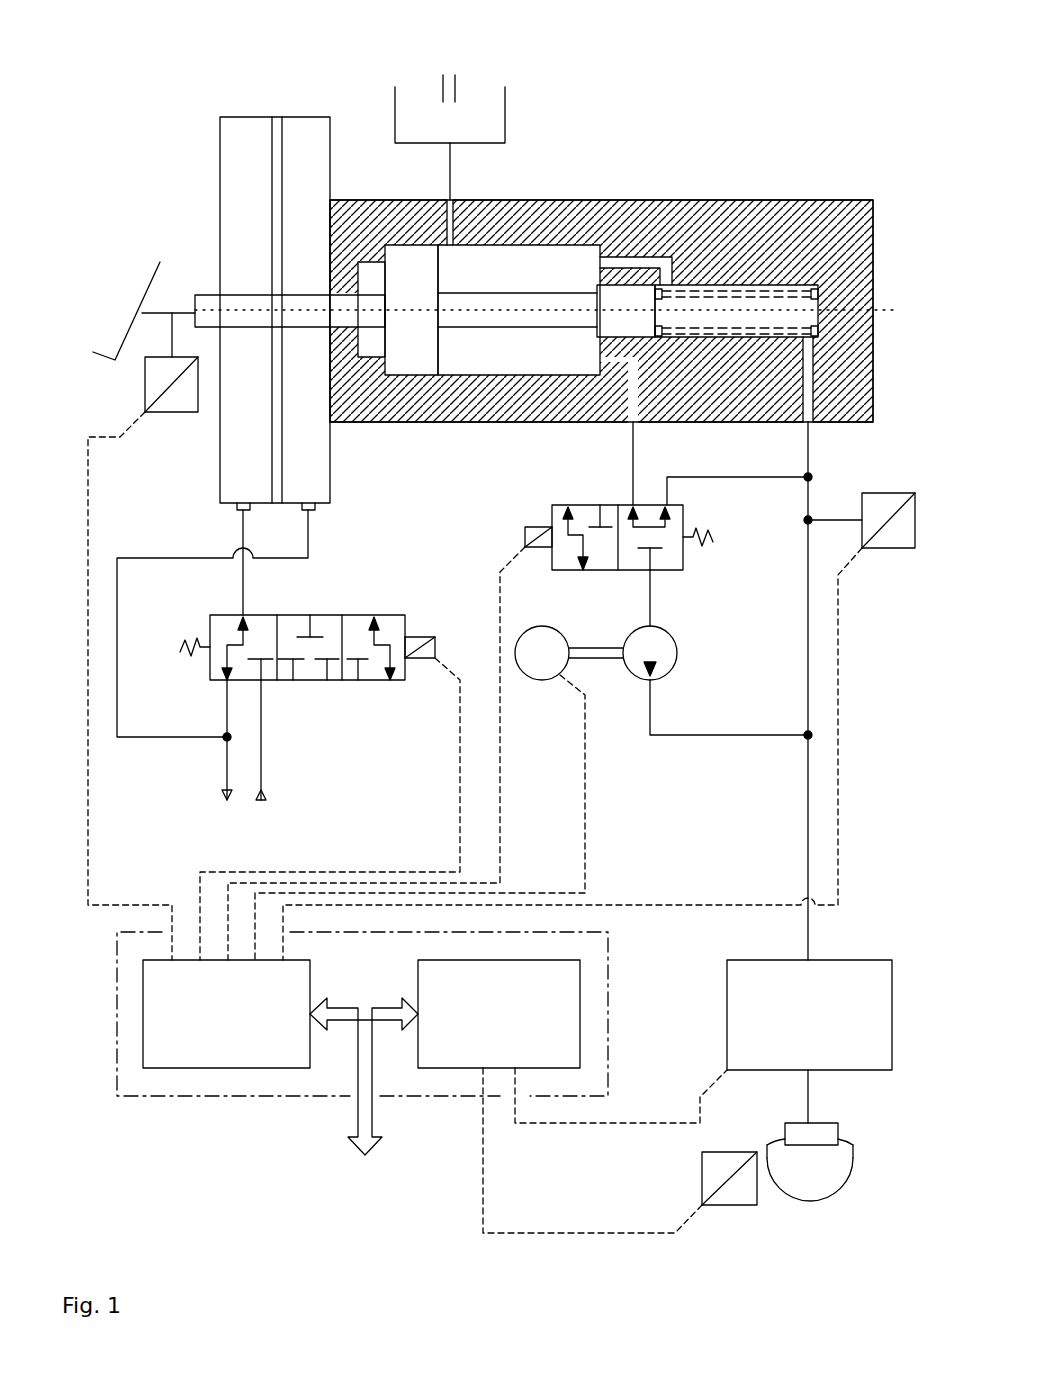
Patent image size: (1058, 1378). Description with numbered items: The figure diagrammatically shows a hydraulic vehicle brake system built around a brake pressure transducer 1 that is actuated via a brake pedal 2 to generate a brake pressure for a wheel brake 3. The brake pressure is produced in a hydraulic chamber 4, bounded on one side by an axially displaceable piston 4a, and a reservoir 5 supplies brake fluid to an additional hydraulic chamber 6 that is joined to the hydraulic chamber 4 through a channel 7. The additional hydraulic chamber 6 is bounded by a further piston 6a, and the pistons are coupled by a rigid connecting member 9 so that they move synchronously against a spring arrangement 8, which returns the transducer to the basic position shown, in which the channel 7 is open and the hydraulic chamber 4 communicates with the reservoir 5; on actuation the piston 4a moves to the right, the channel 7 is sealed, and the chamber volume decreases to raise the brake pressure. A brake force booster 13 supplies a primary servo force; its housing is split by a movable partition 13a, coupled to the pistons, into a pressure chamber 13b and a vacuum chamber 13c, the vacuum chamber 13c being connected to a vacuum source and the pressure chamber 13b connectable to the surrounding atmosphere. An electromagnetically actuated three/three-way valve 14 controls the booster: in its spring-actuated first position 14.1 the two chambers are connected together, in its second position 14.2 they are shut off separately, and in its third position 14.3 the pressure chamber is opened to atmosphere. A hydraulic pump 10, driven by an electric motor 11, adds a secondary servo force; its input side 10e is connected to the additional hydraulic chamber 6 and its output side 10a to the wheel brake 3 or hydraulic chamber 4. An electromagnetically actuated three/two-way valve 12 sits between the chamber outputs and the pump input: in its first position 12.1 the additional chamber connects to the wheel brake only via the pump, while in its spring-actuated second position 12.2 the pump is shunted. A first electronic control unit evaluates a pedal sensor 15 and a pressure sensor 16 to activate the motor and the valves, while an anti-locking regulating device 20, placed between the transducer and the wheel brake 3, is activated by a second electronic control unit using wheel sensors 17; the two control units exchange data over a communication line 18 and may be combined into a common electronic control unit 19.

The brake pressure transducer 1 is at (862, 158).
The brake pedal 2 is at (160, 262).
The wheel brake 3 is at (828, 1135).
The hydraulic chamber 4 is at (728, 325).
The piston 4a is at (622, 293).
The reservoir 5 is at (458, 134).
The additional hydraulic chamber 6 is at (513, 281).
The further piston 6a is at (415, 262).
The channel 7 is at (660, 257).
The spring arrangement 8 is at (752, 284).
The rigid connecting member 9 is at (531, 300).
The hydraulic pump 10 is at (654, 653).
The output side 10a is at (652, 693).
The input side 10e is at (652, 615).
The electric motor 11 is at (540, 680).
The 3/2-way valve 12 is at (552, 505).
The first position 12.1 is at (558, 568).
The second position 12.2 is at (680, 567).
The brake force booster 13 is at (220, 117).
The movable partition 13a is at (276, 122).
The pressure chamber 13b is at (268, 185).
The vacuum chamber 13c is at (328, 185).
The 3/3-way valve 14 is at (210, 615).
The first position 14.1 is at (267, 628).
The second position 14.2 is at (330, 672).
The third position 14.3 is at (400, 672).
The sensor 15 is at (188, 402).
The sensor 16 is at (902, 550).
The sensors 17 is at (730, 1147).
The communication line 18 is at (366, 1105).
The common electronic control unit 19 is at (117, 1096).
The anti-locking regulating device 20 is at (892, 960).